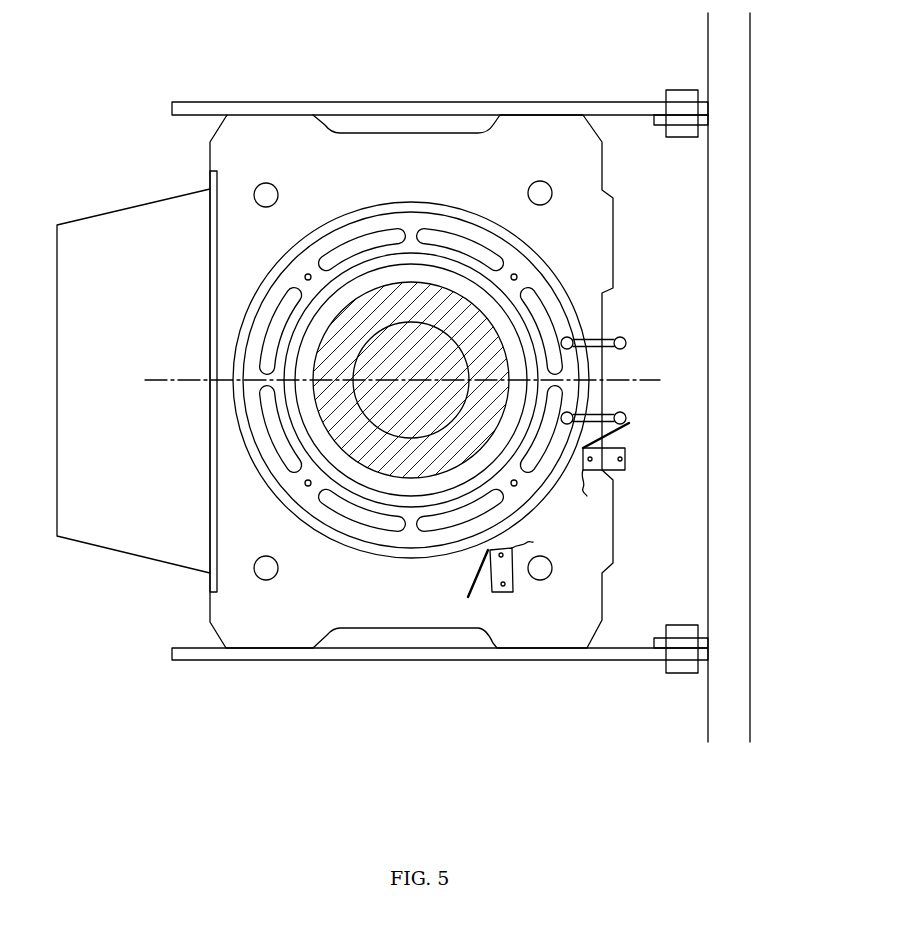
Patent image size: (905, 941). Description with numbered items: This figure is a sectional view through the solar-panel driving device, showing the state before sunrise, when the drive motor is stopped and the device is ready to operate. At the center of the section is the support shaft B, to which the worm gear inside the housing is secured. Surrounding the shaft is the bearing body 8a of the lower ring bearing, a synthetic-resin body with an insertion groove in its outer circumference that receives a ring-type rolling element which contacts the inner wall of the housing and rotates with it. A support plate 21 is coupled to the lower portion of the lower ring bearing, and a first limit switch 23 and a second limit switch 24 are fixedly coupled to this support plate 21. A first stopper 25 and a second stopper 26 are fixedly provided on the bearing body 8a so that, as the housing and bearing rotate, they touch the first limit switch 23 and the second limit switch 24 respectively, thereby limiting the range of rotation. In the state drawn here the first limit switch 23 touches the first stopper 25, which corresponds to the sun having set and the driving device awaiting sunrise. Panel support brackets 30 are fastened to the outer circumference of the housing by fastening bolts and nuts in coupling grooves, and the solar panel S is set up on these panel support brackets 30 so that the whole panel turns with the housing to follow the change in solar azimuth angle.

The support shaft B is at (382, 306).
The bearing body 8a is at (437, 223).
The support plate 21 is at (524, 137).
The first limit switch 23 is at (610, 457).
The second limit switch 24 is at (503, 573).
The first stopper 25 is at (628, 416).
The second stopper 26 is at (612, 338).
The panel support bracket 30 is at (633, 110).
The solar panel S is at (728, 528).